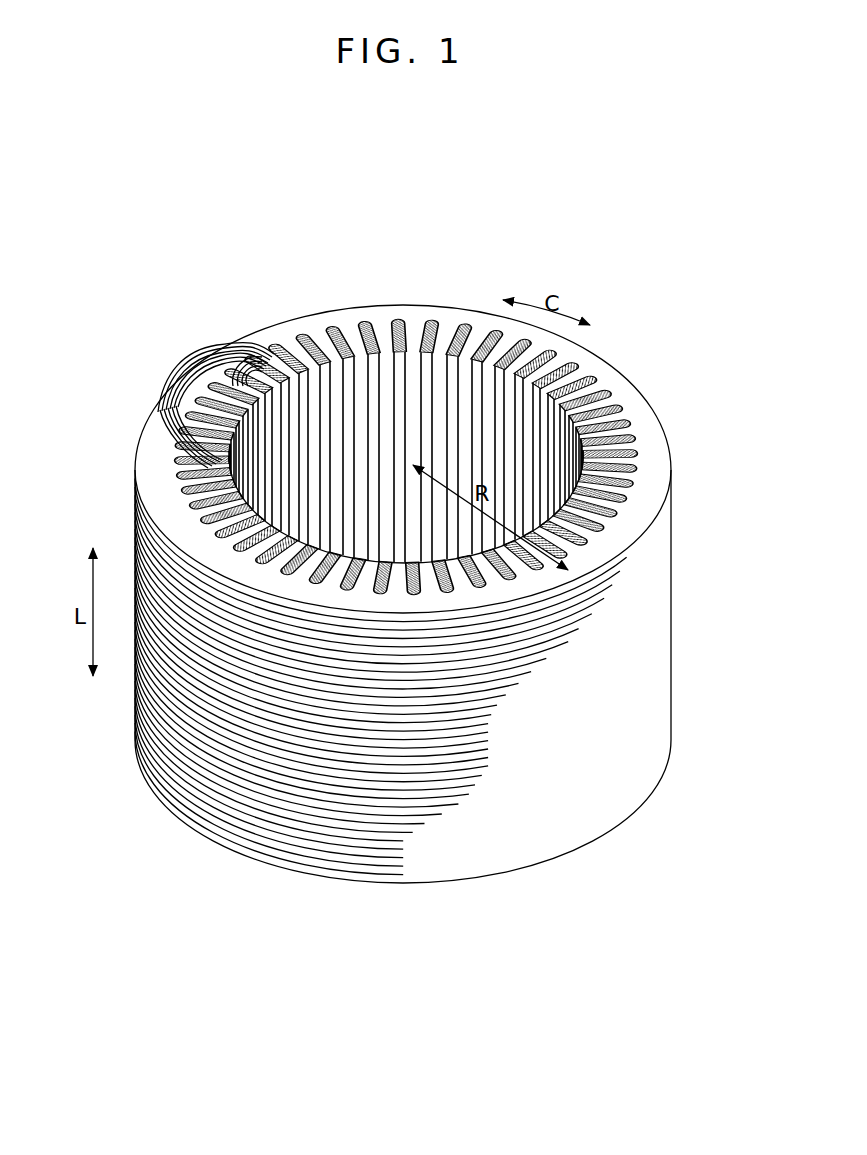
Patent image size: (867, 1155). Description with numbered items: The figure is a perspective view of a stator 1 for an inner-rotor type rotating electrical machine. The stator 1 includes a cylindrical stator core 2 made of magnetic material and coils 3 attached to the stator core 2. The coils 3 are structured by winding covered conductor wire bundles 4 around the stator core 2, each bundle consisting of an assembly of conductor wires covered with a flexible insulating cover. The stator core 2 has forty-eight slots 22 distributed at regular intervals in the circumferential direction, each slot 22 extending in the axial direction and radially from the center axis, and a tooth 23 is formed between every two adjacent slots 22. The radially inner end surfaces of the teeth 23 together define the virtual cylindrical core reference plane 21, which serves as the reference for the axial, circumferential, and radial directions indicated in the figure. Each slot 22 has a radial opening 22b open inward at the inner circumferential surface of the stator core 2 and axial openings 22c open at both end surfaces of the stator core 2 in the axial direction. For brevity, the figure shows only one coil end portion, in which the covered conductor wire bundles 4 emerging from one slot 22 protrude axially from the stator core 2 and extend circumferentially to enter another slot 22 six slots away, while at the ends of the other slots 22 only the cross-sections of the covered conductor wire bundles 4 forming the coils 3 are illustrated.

The stator 1 is at (409, 563).
The stator core 2 is at (672, 628).
The coil 3 is at (178, 359).
The covered conductor wire bundle 4 is at (343, 333).
The cylindrical core reference plane 21 is at (388, 436).
The slot 22 is at (461, 333).
The radial opening 22b is at (453, 374).
The axial opening 22c is at (200, 490).
The tooth 23 is at (417, 335).